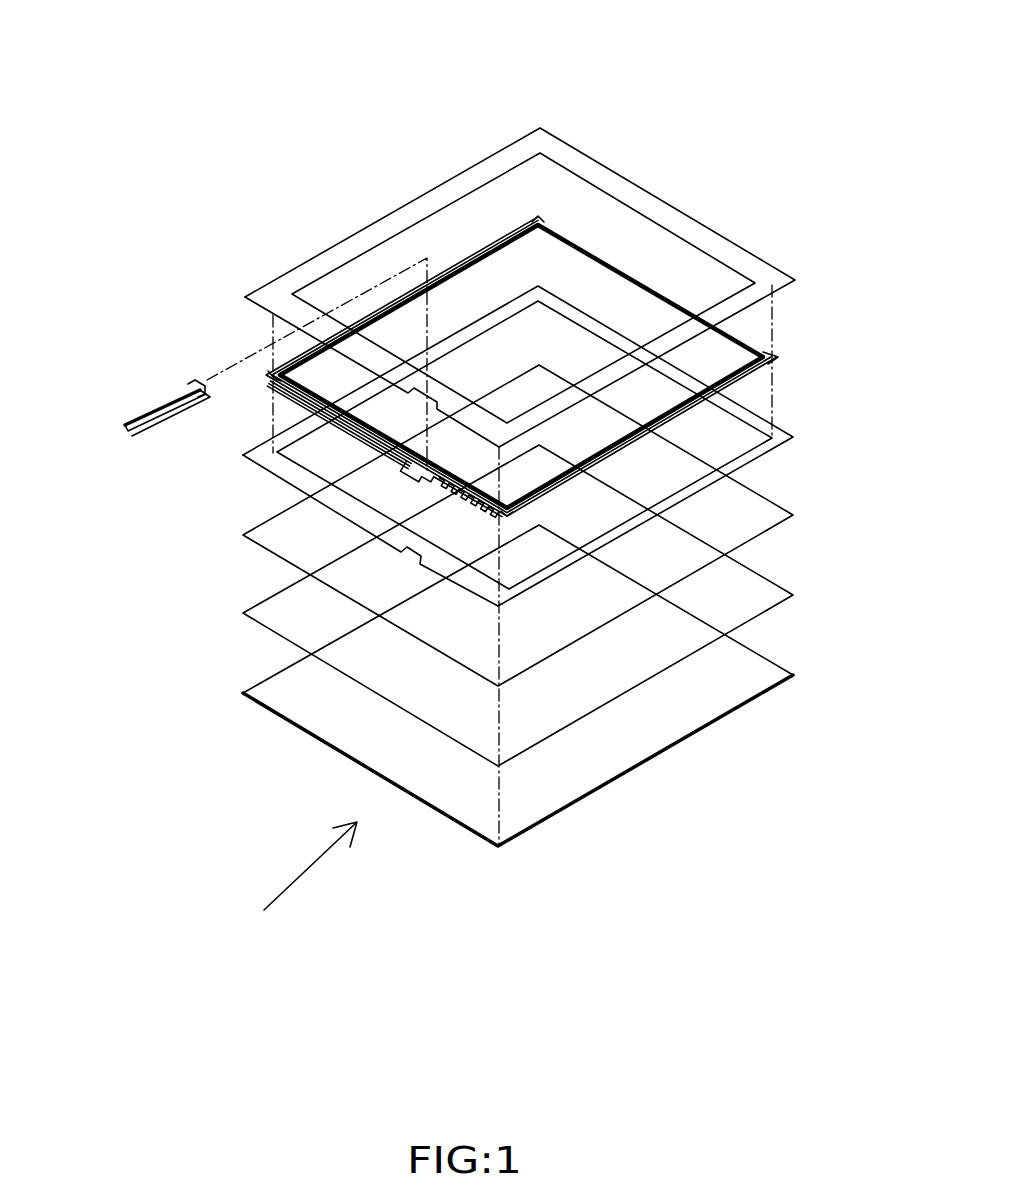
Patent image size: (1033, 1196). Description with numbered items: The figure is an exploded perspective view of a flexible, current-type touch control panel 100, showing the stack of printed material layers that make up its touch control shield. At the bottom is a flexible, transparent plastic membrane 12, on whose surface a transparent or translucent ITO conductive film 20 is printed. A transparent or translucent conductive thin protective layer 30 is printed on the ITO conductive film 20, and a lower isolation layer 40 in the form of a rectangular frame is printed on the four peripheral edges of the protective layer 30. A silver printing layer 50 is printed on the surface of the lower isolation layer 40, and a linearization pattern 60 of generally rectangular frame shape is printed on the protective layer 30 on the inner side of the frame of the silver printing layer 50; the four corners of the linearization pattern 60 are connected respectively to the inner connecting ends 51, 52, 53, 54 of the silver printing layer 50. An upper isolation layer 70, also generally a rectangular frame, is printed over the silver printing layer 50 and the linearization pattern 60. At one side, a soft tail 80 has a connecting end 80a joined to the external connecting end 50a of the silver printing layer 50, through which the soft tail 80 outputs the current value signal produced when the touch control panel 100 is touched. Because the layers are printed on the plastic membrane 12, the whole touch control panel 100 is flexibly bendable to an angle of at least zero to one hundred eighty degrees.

The touch control panel 100 is at (302, 956).
The transparent plastic membrane 12 is at (697, 697).
The ITO conductive film 20 is at (745, 607).
The protective layer 30 is at (748, 523).
The lower isolation layer 40 is at (750, 458).
The silver printing layer 50 is at (743, 380).
The external connecting end 50a is at (418, 473).
The inner connecting end 51 is at (540, 222).
The inner connecting end 52 is at (273, 360).
The inner connecting end 53 is at (508, 512).
The inner connecting end 54 is at (772, 357).
The linearization pattern 60 is at (625, 273).
The upper isolation layer 70 is at (697, 231).
The soft tail 80 is at (152, 427).
The connecting end 80a is at (188, 383).